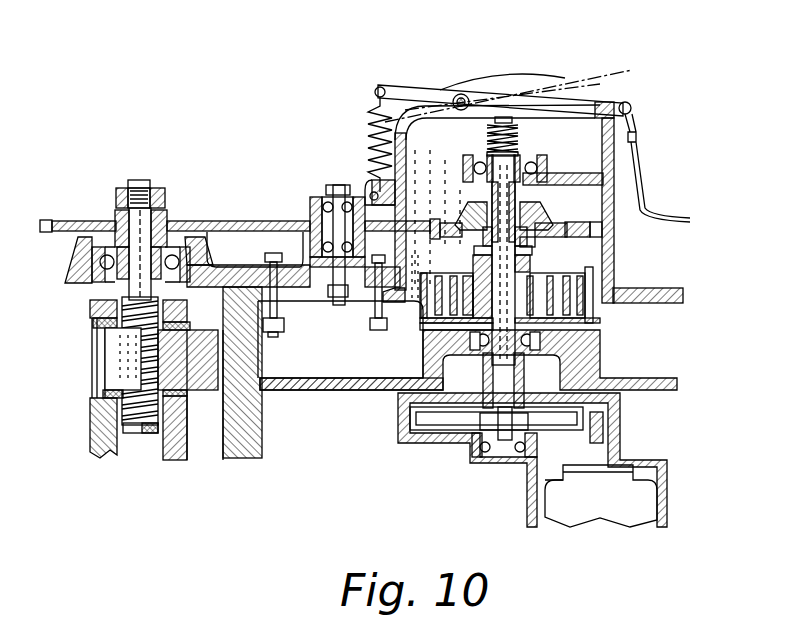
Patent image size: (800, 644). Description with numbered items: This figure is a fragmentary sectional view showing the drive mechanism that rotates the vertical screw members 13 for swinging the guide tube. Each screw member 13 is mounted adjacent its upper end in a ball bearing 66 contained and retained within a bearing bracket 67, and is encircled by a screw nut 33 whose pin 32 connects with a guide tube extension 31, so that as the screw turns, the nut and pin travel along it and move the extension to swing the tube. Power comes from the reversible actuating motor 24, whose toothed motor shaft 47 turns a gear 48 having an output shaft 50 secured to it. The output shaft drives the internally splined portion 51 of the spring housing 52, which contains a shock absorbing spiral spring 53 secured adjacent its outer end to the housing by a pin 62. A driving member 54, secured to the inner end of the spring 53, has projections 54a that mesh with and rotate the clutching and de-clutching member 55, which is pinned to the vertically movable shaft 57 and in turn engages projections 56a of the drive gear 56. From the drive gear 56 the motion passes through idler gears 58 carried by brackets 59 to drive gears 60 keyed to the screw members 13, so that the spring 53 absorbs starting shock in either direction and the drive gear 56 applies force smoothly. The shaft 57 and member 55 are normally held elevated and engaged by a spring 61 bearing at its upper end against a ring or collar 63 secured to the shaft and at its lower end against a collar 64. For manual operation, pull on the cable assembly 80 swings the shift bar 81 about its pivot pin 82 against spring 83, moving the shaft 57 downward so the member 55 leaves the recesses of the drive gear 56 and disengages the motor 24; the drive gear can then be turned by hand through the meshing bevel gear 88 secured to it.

The screw member 13 is at (143, 433).
The actuating motor 24 is at (667, 495).
The extension 31 is at (98, 413).
The pin 32 is at (205, 392).
The screw nut 33 is at (120, 352).
The toothed motor shaft 47 is at (605, 425).
The gear 48 is at (455, 430).
The output shaft 50 is at (515, 388).
The internally splined portion 51 is at (490, 385).
The spring housing 52 is at (425, 316).
The shock absorbing spiral spring 53 is at (430, 295).
The driving member 54 is at (470, 280).
The projection 54a is at (532, 268).
The clutching and de-clutching member 55 is at (480, 252).
The drive gear 56 is at (590, 230).
The projection 56a is at (527, 243).
The shaft 57 is at (498, 194).
The idler gear 58 is at (293, 225).
The bracket 59 is at (325, 290).
The drive gear 60 is at (98, 225).
The spring 61 is at (520, 150).
The pin 62 is at (590, 315).
The ring or collar 63 is at (516, 133).
The collar 64 is at (486, 155).
The ball bearing 66 is at (112, 273).
The bearing bracket 67 is at (76, 262).
The cable assembly 80 is at (644, 165).
The shift bar 81 is at (545, 100).
The pivot pin 82 is at (458, 94).
The spring 83 is at (368, 128).
The bevel gear 88 is at (535, 218).